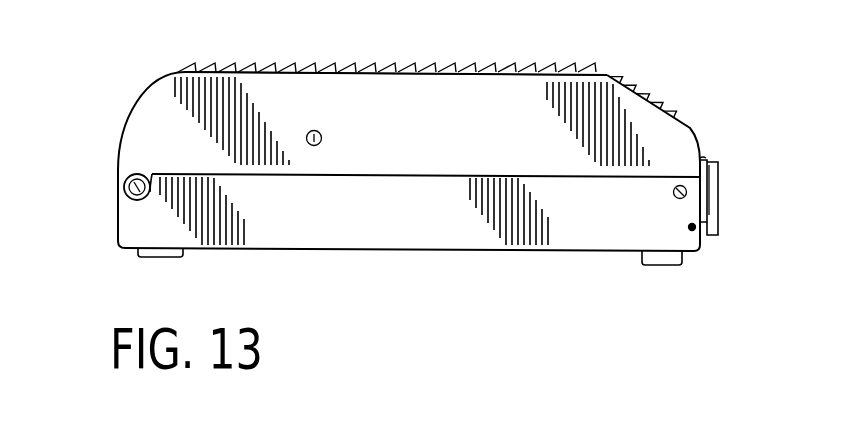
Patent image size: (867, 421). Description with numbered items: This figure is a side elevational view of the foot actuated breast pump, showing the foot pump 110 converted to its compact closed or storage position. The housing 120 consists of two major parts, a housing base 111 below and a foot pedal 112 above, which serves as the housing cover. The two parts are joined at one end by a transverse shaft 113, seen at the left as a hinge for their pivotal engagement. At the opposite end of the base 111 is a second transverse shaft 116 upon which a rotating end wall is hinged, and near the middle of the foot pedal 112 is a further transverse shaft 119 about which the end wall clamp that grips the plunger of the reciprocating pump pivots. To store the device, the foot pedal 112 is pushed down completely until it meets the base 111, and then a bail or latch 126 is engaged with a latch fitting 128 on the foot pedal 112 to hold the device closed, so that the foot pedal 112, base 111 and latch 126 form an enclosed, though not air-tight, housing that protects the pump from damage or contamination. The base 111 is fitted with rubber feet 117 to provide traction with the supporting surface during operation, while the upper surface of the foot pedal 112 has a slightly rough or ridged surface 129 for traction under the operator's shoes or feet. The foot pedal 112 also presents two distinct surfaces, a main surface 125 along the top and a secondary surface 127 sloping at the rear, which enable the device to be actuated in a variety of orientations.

The foot pump 110 is at (226, 62).
The housing base 111 is at (400, 249).
The foot pedal 112 is at (377, 97).
The transverse shaft 113 is at (142, 175).
The second transverse shaft 116 is at (676, 197).
The rubber feet 117 is at (157, 257).
The transverse shaft 119 is at (313, 130).
The housing 120 is at (177, 115).
The main surface 125 is at (505, 73).
The latch 126 is at (716, 225).
The secondary surface 127 is at (652, 100).
The latch fitting 128 is at (713, 160).
The ridged surface 129 is at (430, 73).